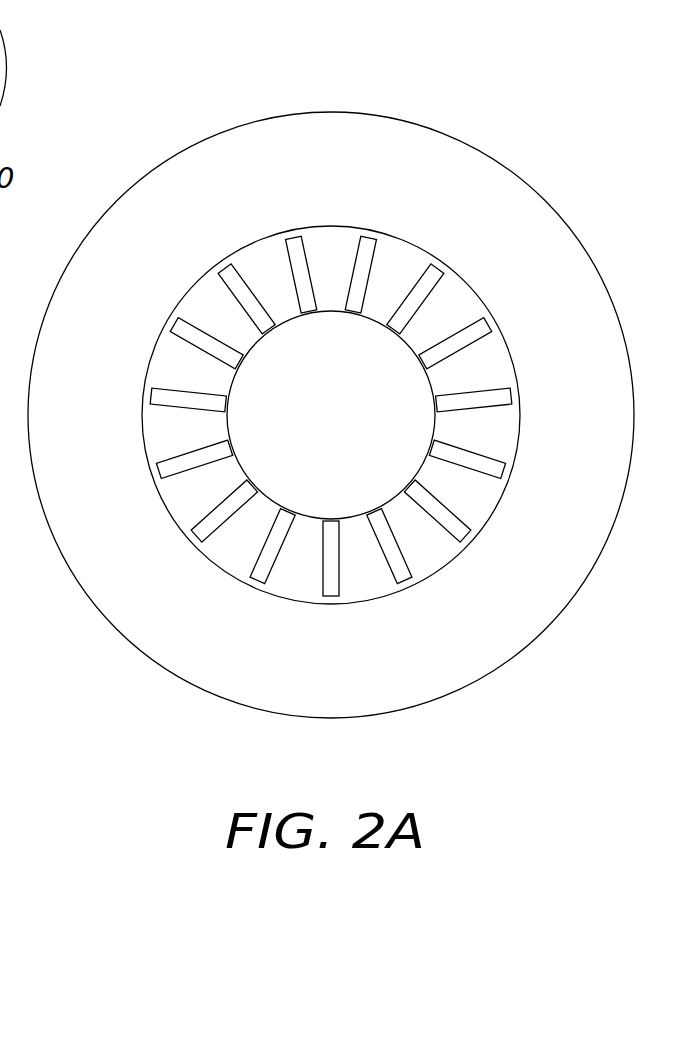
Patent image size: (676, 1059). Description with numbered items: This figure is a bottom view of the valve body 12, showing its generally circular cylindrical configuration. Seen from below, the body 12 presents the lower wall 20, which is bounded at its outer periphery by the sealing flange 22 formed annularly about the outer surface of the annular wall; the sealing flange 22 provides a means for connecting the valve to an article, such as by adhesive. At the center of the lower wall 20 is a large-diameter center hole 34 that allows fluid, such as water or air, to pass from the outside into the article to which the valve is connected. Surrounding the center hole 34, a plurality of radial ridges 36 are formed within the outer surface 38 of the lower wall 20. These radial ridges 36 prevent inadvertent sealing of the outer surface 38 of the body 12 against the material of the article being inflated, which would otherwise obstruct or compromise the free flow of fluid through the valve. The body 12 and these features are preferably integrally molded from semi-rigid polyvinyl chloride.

The body 12 is at (334, 428).
The lower wall 20 is at (232, 540).
The sealing flange 22 is at (523, 573).
The center hole 34 is at (331, 415).
The radial ridges 36 is at (203, 527).
The outer surface 38 is at (185, 493).